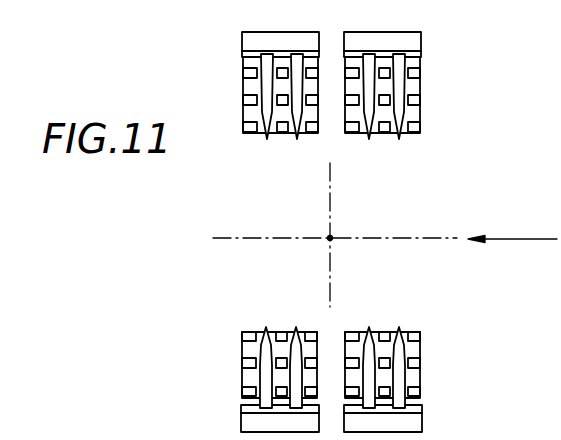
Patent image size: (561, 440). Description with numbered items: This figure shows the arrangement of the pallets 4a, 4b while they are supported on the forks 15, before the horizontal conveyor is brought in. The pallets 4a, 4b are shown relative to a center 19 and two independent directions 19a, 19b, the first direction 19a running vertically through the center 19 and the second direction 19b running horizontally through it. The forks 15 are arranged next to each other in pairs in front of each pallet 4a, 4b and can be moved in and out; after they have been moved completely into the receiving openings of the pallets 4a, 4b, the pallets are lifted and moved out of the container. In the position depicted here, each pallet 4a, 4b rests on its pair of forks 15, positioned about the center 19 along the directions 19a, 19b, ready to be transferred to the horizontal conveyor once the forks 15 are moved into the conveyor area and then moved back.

The pallet 4a is at (243, 333).
The pallet 4b is at (415, 132).
The forks 15 is at (398, 87).
The center 19 is at (332, 240).
The direction 19a is at (331, 198).
The direction 19b is at (300, 237).